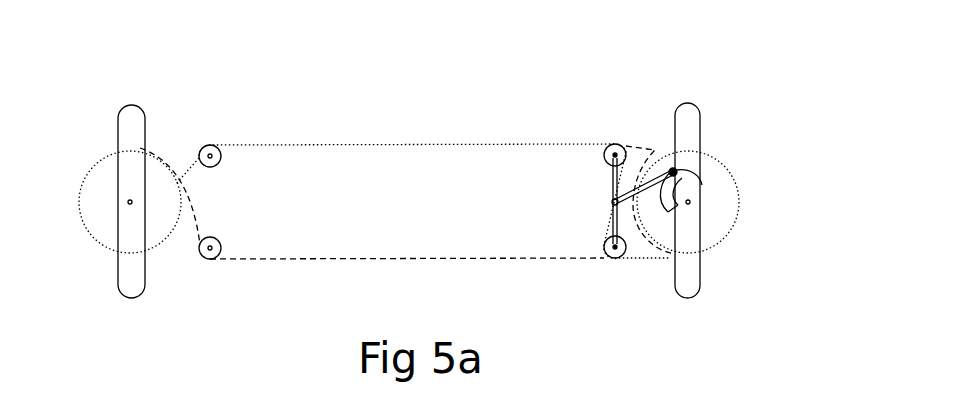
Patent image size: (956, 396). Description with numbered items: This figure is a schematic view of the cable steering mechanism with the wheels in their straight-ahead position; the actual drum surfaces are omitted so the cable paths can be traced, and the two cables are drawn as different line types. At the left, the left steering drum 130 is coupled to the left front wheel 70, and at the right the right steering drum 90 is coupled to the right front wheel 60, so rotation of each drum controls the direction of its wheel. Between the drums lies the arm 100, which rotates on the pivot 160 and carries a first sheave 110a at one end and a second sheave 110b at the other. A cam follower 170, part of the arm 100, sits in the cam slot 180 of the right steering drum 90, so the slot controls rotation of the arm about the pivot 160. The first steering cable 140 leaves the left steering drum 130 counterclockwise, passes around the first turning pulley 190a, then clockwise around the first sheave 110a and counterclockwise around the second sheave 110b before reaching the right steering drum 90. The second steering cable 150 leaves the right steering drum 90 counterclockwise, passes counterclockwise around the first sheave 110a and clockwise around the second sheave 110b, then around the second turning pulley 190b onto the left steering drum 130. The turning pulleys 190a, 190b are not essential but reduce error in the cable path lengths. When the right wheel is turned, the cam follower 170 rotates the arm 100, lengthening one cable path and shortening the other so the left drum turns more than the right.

The right front wheel 60 is at (730, 53).
The left front wheel 70 is at (133, 137).
The right steering drum 90 is at (713, 170).
The arm 100 is at (613, 200).
The first sheave 110a is at (610, 162).
The second sheave 110b is at (600, 245).
The left steering drum 130 is at (95, 200).
The first steering cable 140 is at (260, 144).
The second steering cable 150 is at (262, 260).
The pivot 160 is at (611, 203).
The cam follower 170 is at (673, 168).
The cam slot 180 is at (690, 180).
The first turning pulley 190a is at (208, 166).
The second turning pulley 190b is at (203, 257).